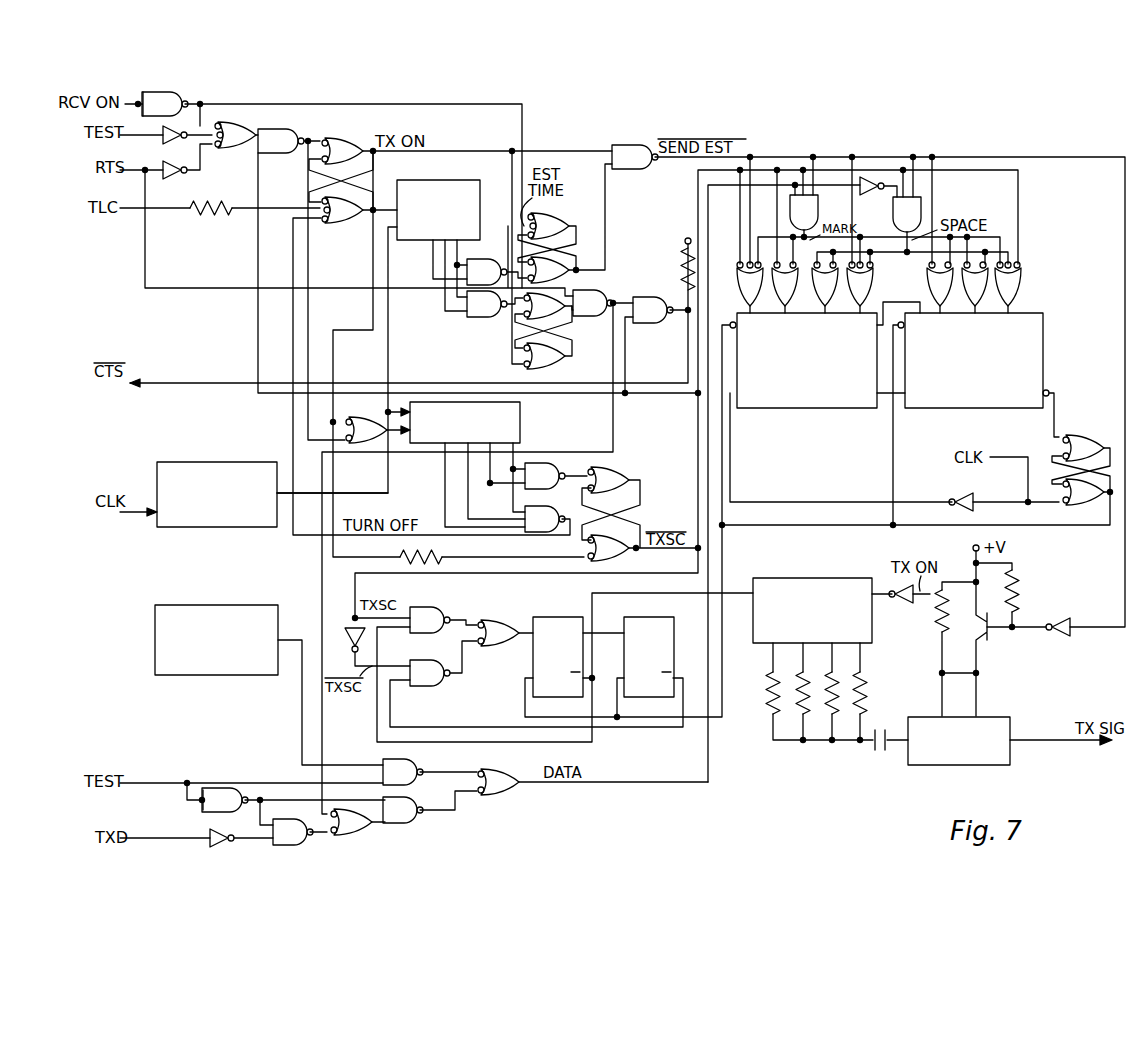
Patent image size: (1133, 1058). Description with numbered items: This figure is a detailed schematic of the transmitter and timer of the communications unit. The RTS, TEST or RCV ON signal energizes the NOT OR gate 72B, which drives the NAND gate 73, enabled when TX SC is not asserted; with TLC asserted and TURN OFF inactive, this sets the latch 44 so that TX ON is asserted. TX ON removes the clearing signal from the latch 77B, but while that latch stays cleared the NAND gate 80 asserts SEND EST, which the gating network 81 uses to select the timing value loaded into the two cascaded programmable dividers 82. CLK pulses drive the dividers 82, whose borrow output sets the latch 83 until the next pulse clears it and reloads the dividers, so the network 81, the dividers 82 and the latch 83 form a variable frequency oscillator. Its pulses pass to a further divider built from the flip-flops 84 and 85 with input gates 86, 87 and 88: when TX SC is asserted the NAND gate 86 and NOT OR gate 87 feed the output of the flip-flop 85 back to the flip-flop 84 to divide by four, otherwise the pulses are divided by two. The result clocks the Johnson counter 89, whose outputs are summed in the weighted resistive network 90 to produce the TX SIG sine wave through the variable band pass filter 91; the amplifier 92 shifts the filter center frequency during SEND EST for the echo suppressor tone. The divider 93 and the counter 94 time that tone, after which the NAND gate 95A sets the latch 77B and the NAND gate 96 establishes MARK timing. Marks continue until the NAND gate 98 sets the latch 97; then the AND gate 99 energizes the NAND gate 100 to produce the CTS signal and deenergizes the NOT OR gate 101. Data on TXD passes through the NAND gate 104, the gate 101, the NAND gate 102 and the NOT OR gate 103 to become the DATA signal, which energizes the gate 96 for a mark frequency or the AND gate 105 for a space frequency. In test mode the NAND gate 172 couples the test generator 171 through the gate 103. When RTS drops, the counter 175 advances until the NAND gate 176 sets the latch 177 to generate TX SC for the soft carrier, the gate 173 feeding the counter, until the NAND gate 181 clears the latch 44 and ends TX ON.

The NOT OR gate 72B is at (240, 130).
The NAND gate 73 is at (281, 141).
The latch 44 is at (336, 132).
The counter 94 is at (438, 210).
The NAND gate 95A is at (487, 272).
The latch 77B is at (562, 222).
The NAND gate 98 is at (487, 304).
The AND gate 99 is at (593, 303).
The latch 97 is at (568, 334).
The NAND gate 100 is at (649, 345).
The NAND gate 80 is at (635, 157).
The NAND gate 96 is at (804, 216).
The AND gate 105 is at (907, 224).
The gating network 81 is at (1029, 254).
The programmable dividers 82 is at (871, 425).
The latch 83 is at (1078, 437).
The receive data logic error detector 173 is at (376, 415).
The counter 175 is at (522, 416).
The NAND gate 176 is at (545, 476).
The latch 177 is at (641, 507).
The NAND gate 181 is at (545, 519).
The divider 93 is at (217, 494).
The Johnson counter 89 is at (810, 578).
The amplifier 92 is at (1024, 616).
The weighted resistive network 90 is at (878, 719).
The variable band pass filter 91 is at (996, 717).
The NAND gate 88 is at (430, 620).
The NOT OR gate 87 is at (498, 633).
The NAND gate 86 is at (430, 673).
The flip-flop 84 is at (558, 657).
The flip-flop 85 is at (649, 657).
The test generator 171 is at (216, 640).
The NAND gate 172 is at (403, 772).
The NOT OR gate 103 is at (498, 782).
The NAND gate 102 is at (403, 810).
The NOT OR gate 101 is at (358, 822).
The NAND gate 104 is at (293, 832).